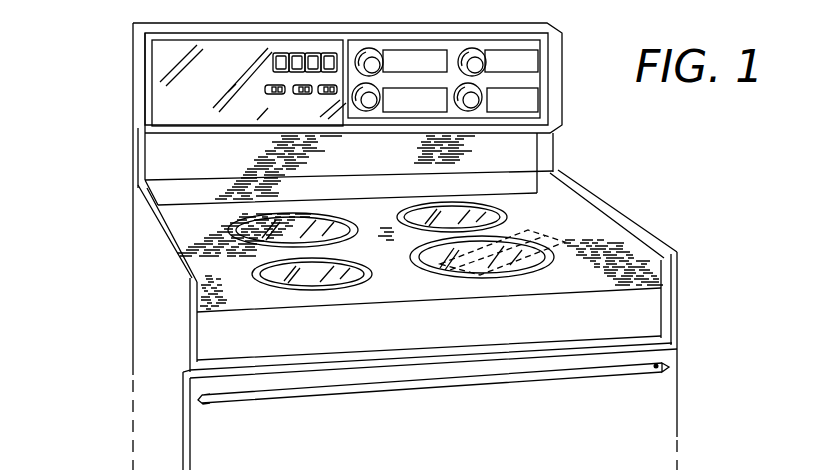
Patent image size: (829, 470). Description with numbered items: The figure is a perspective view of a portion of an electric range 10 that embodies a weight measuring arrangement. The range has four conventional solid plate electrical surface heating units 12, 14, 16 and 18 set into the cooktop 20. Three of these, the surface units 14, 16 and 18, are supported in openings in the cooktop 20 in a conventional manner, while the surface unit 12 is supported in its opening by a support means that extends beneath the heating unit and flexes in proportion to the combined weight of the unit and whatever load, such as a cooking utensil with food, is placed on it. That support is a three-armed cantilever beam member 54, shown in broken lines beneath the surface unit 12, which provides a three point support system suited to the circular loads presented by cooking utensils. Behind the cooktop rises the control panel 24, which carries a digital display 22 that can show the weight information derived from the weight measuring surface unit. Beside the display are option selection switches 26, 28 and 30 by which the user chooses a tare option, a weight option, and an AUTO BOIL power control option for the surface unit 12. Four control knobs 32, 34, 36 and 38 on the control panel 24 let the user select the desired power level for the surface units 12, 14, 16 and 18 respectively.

The electric range 10 is at (693, 204).
The surface heating unit 12 is at (545, 275).
The surface heating unit 14 is at (502, 212).
The surface heating unit 16 is at (228, 224).
The surface heating unit 18 is at (317, 292).
The cooktop 20 is at (398, 282).
The digital display 22 is at (294, 53).
The control panel 24 is at (176, 96).
The option selection switch 26 is at (278, 90).
The option selection switch 28 is at (303, 93).
The option selection switch 30 is at (328, 93).
The control knob 32 is at (475, 63).
The control knob 34 is at (474, 101).
The control knob 36 is at (367, 100).
The control knob 38 is at (373, 64).
The three-armed cantilever beam member 54 is at (553, 238).